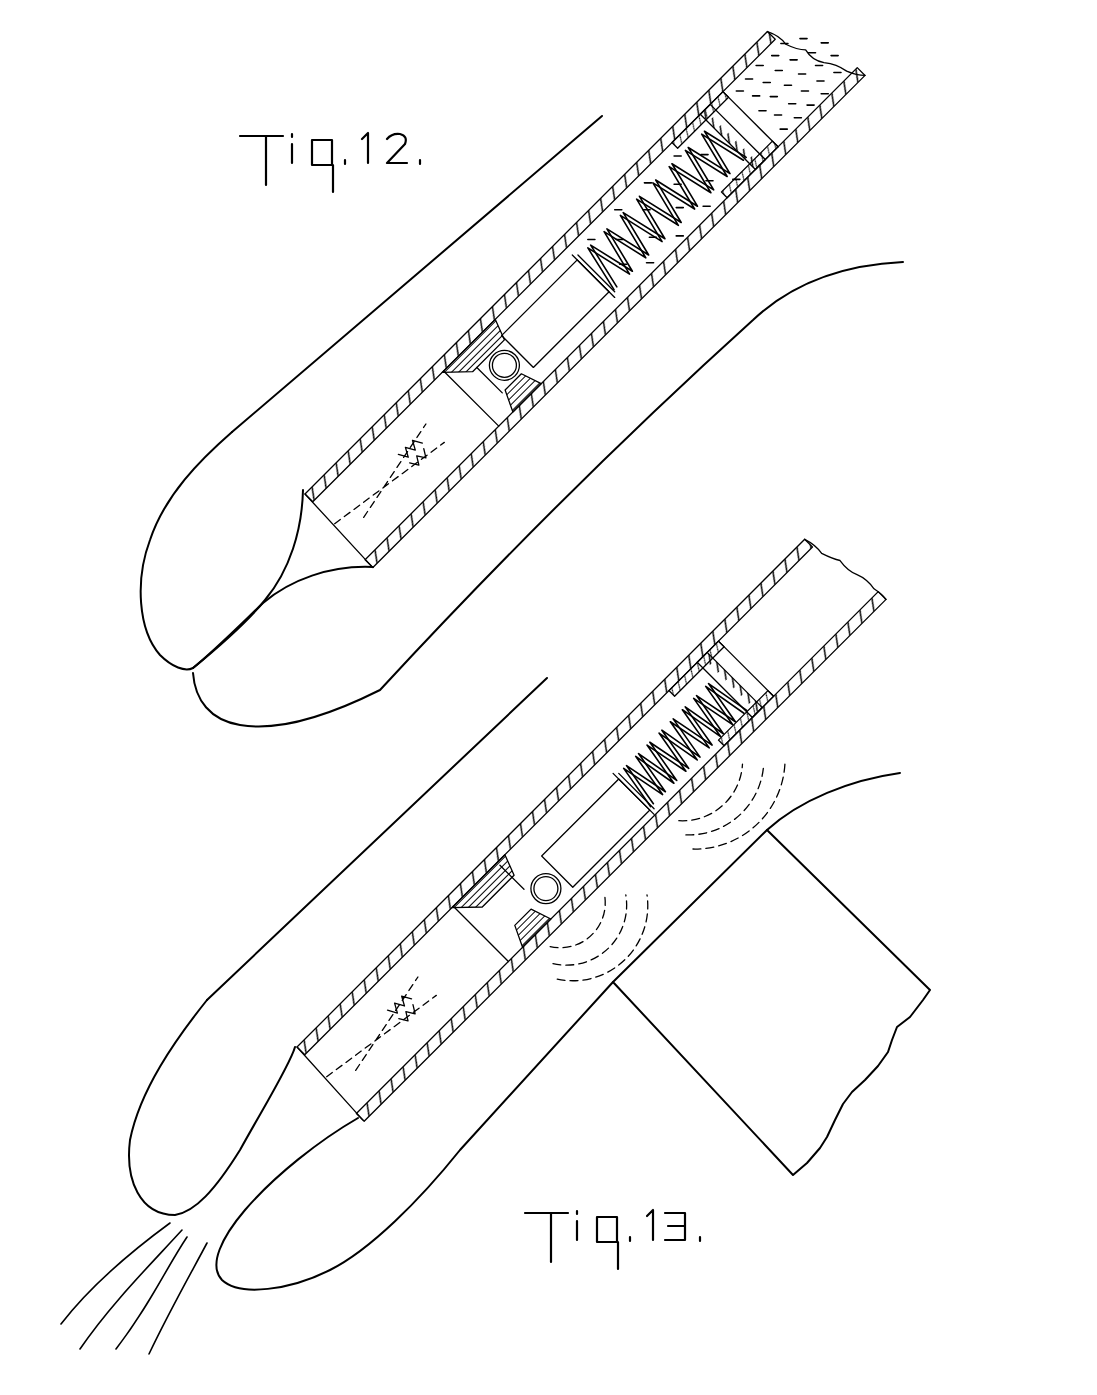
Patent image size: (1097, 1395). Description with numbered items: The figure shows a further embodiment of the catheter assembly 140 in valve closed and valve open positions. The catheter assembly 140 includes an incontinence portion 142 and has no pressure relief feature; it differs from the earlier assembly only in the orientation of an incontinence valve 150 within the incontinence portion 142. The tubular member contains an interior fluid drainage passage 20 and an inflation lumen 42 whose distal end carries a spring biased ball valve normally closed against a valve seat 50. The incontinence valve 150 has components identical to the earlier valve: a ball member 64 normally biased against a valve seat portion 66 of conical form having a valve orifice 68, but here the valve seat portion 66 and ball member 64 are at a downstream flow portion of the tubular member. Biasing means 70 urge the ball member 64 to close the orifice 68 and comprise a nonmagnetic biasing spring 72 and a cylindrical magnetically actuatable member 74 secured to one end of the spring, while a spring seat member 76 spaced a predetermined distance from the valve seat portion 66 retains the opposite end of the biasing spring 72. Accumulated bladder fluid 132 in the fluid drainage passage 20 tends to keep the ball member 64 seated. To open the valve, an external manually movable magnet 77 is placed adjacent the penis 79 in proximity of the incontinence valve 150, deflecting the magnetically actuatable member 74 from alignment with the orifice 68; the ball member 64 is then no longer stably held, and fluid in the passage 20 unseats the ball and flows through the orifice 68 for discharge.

In FIG. 12, the fluid drainage passage 20 is at (800, 111).
In FIG. 13, the fluid drainage passage 20 is at (800, 645).
In FIG. 12, the inflation lumen 42 is at (395, 518).
In FIG. 13, the inflation lumen 42 is at (395, 1086).
In FIG. 12, the valve seat 50 is at (410, 458).
In FIG. 12, the ball member 64 is at (525, 398).
In FIG. 13, the ball member 64 is at (562, 902).
In FIG. 12, the valve seat portion 66 is at (492, 322).
In FIG. 13, the valve seat portion 66 is at (492, 872).
In FIG. 12, the valve orifice 68 is at (448, 372).
In FIG. 13, the valve orifice 68 is at (482, 935).
In FIG. 12, the biasing means 70 is at (690, 241).
In FIG. 13, the biasing means 70 is at (742, 747).
In FIG. 12, the biasing spring 72 is at (658, 270).
In FIG. 13, the biasing spring 72 is at (682, 800).
In FIG. 12, the magnetically actuatable member 74 is at (588, 340).
In FIG. 13, the magnetically actuatable member 74 is at (632, 845).
In FIG. 12, the spring seat member 76 is at (700, 106).
In FIG. 13, the spring seat member 76 is at (697, 653).
In FIG. 13, the manually movable magnet 77 is at (733, 966).
In FIG. 12, the penis 79 is at (232, 440).
In FIG. 13, the penis 79 is at (323, 900).
In FIG. 13, the bladder fluid 132 is at (170, 1330).
In FIG. 12, the catheter assembly 140 is at (622, 106).
In FIG. 13, the catheter assembly 140 is at (518, 730).
In FIG. 12, the incontinence portion 142 is at (778, 190).
In FIG. 13, the incontinence portion 142 is at (747, 586).
In FIG. 12, the incontinence valve 150 is at (540, 244).
In FIG. 13, the incontinence valve 150 is at (601, 738).